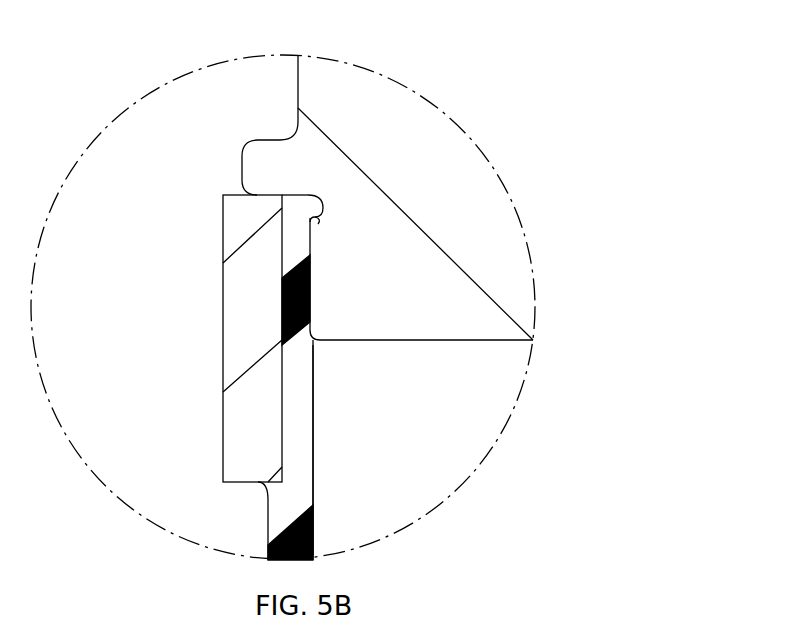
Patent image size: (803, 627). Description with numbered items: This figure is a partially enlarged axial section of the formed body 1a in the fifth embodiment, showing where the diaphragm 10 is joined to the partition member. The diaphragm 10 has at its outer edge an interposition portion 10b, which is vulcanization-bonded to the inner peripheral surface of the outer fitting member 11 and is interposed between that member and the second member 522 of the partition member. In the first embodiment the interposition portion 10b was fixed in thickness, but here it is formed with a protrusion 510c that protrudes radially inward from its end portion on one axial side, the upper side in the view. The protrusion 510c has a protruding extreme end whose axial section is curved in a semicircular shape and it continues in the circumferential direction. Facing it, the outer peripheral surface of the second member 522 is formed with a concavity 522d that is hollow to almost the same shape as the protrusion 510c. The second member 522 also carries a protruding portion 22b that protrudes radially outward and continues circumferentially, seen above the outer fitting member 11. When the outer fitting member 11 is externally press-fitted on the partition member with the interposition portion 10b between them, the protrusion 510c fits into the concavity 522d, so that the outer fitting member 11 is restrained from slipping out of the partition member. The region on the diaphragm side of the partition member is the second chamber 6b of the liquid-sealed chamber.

The formed body 1a is at (624, 69).
The second member 522 is at (433, 118).
The concavity 522d is at (314, 222).
The protrusion 510c is at (307, 206).
The diaphragm 10 is at (395, 360).
The interposition portion 10b is at (303, 398).
The protruding portion 22b is at (253, 172).
The outer fitting member 11 is at (233, 344).
The second chamber 6b is at (441, 454).